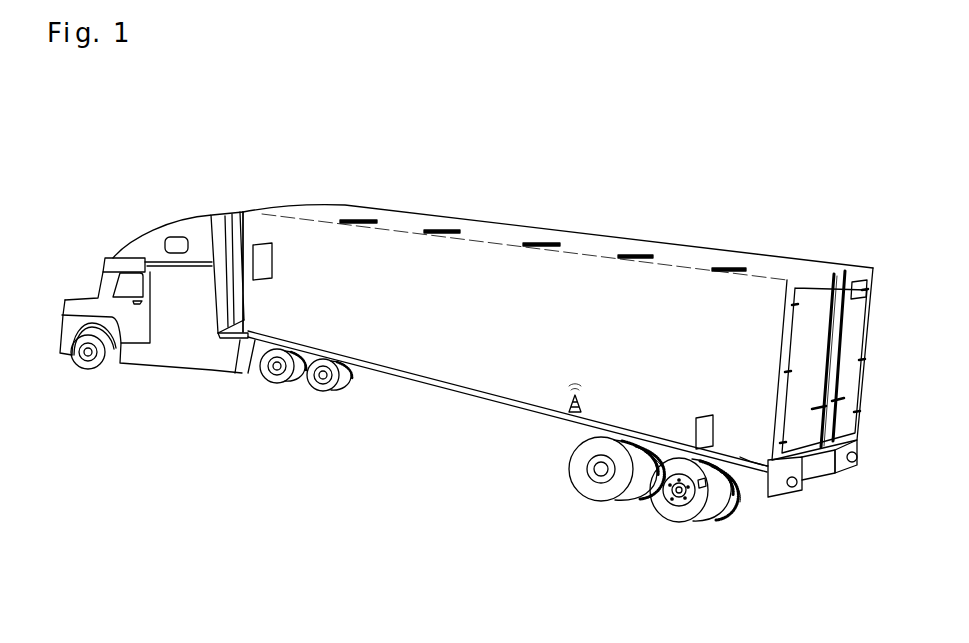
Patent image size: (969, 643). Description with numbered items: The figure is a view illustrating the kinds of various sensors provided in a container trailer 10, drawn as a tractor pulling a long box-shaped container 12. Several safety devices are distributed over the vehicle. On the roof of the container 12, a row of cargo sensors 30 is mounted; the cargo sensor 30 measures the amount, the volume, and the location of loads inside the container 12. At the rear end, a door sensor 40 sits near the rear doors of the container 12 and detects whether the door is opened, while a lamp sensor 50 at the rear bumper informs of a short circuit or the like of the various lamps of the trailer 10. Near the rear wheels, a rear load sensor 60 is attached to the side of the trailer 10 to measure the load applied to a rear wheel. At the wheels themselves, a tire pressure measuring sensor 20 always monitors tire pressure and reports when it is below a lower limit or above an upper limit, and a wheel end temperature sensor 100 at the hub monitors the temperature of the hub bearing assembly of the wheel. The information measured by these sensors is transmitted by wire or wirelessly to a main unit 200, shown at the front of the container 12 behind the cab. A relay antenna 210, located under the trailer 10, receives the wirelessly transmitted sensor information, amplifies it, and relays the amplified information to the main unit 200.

The trailer 10 is at (452, 392).
The container 12 is at (766, 252).
The tire pressure measuring sensor 20 is at (701, 484).
The cargo sensor 30 is at (725, 270).
The door sensor 40 is at (853, 280).
The lamp sensor 50 is at (853, 467).
The rear load sensor 60 is at (713, 432).
The wheel end temperature sensor 100 is at (678, 492).
The main unit 200 is at (260, 245).
The relay antenna 210 is at (570, 398).